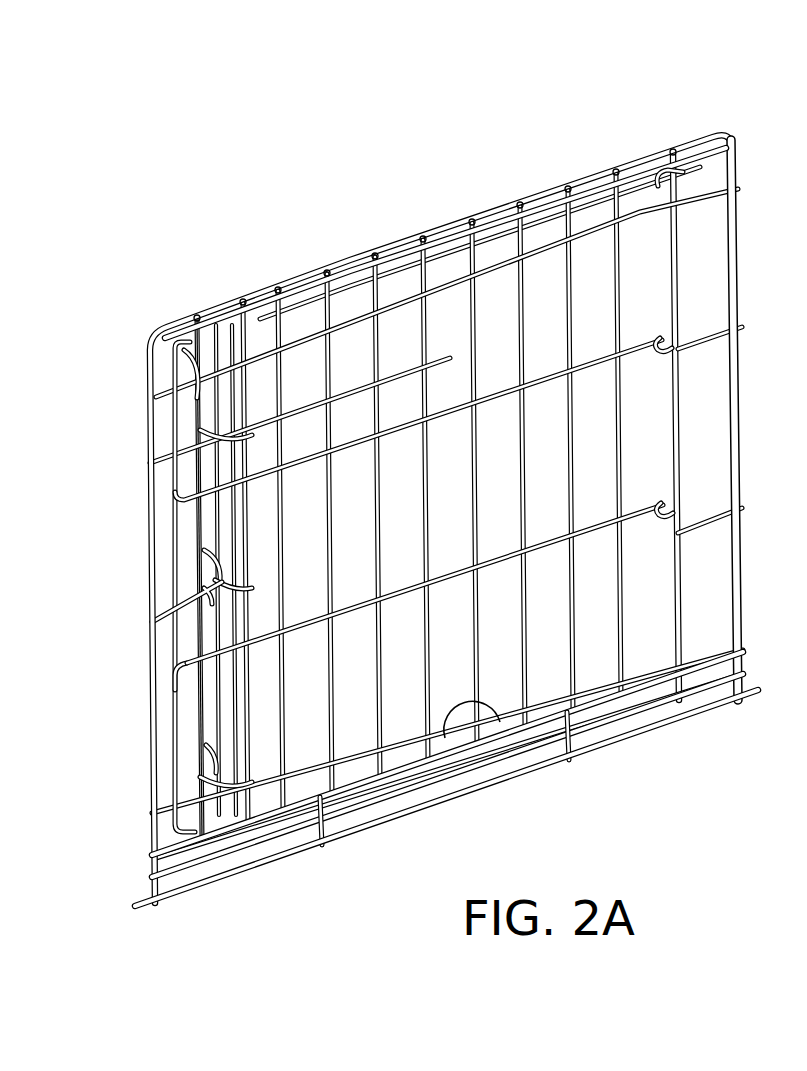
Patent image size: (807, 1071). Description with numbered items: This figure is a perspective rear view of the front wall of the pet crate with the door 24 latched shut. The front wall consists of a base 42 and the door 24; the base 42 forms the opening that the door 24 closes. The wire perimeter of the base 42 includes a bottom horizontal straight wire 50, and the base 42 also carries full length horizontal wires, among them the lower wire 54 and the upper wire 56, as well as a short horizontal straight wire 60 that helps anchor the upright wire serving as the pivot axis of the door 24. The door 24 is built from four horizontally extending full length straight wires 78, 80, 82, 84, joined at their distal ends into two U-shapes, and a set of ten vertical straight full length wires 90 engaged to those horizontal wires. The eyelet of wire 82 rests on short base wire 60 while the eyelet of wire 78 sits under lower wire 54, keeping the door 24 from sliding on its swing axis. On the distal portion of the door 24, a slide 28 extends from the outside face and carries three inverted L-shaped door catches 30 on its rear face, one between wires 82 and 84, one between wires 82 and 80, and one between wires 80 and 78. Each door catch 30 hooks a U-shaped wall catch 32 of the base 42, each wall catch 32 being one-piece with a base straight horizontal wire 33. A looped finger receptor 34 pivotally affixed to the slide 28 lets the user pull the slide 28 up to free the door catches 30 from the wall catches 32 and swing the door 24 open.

The base 42 is at (697, 133).
The upper wire 56 is at (806, 145).
The door 24 is at (547, 210).
The horizontally extending full length straight wire 84 is at (318, 286).
The short horizontal straight wire 60 is at (713, 327).
The horizontally extending full length straight wire 82 is at (637, 350).
The horizontally extending full length straight wire 80 is at (593, 530).
The vertical straight full length wire 90 is at (620, 637).
The lower wire 54 is at (806, 690).
The horizontally extending full length straight wire 78 is at (447, 718).
The bottom horizontal straight wire 50 is at (233, 875).
The slide 28 is at (208, 692).
The door catch 30 is at (205, 565).
The wall catch 32 is at (205, 588).
The base straight horizontal wire 33 is at (205, 625).
The finger receptor 34 is at (185, 418).